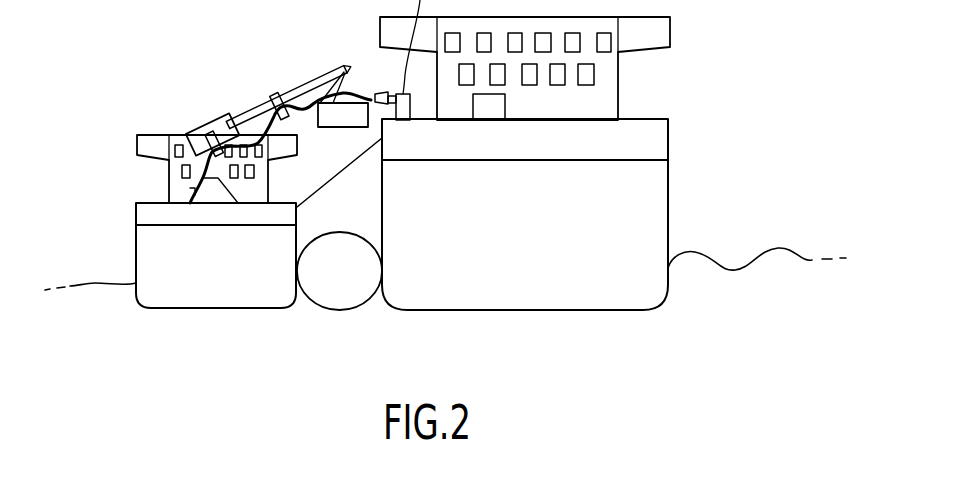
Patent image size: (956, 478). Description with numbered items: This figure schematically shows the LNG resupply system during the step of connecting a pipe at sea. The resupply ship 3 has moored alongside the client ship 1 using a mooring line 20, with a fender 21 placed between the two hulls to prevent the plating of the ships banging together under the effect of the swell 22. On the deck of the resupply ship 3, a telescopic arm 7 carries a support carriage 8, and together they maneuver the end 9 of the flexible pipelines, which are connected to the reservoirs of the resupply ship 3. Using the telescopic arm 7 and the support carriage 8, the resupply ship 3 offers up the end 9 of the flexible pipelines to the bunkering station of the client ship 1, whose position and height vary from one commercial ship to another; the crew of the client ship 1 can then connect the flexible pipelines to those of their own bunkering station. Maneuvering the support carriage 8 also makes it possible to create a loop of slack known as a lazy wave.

The client ship 1 is at (545, 275).
The resupply ship 3 is at (158, 262).
The telescopic arm 7 is at (200, 140).
The support carriage 8 is at (332, 117).
The end of the flexible pipelines 9 is at (373, 93).
The mooring line 20 is at (318, 196).
The fender 21 is at (358, 292).
The swell 22 is at (763, 250).